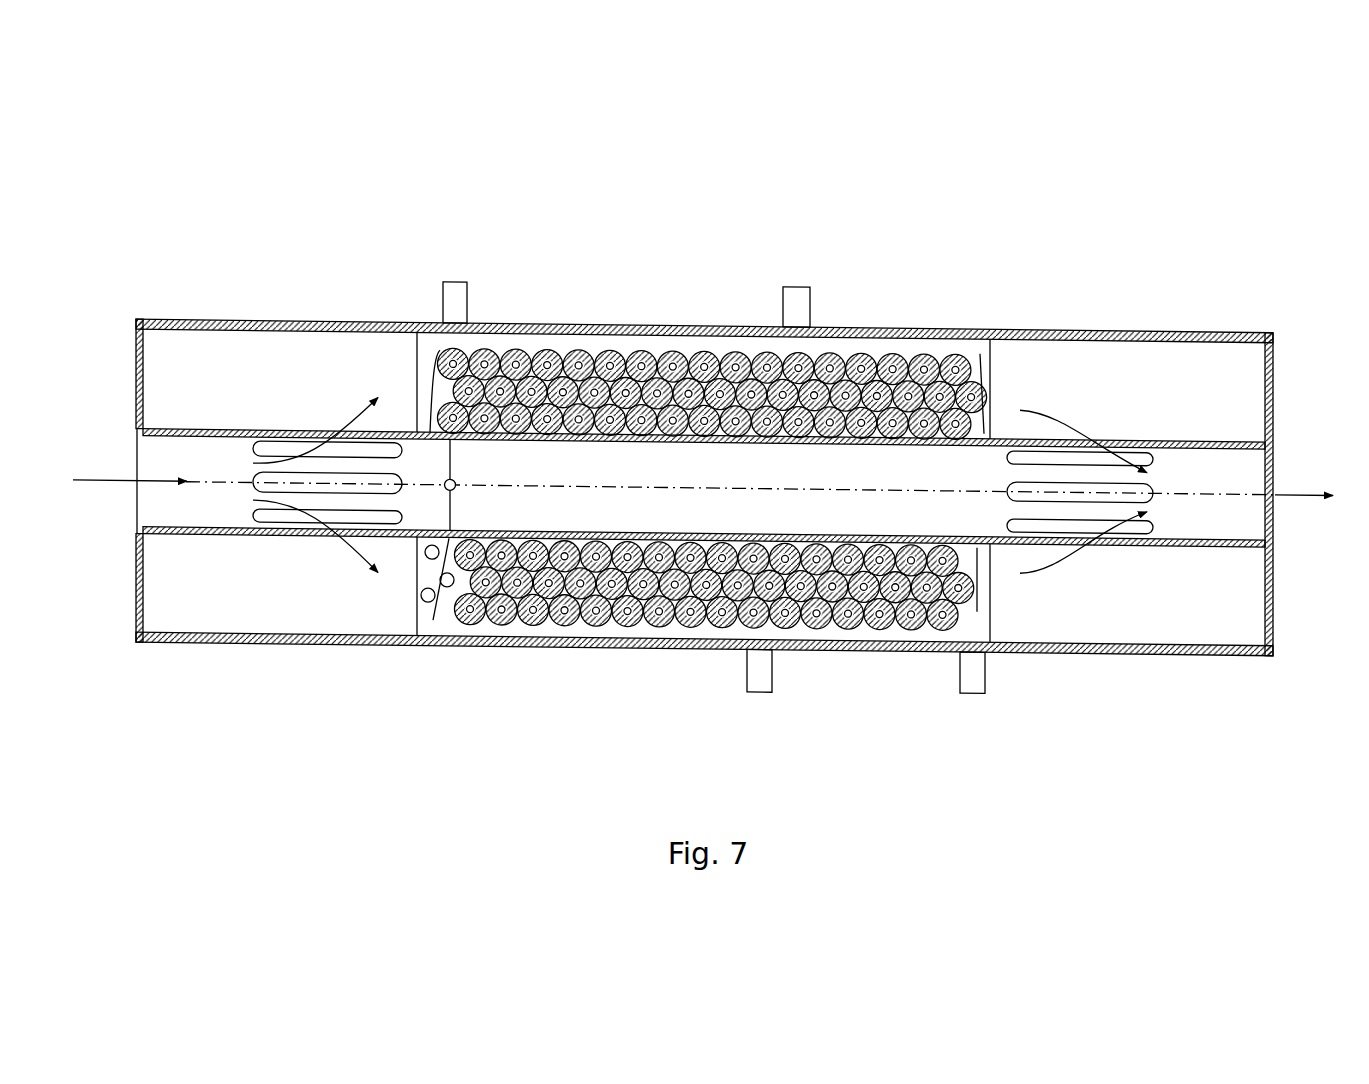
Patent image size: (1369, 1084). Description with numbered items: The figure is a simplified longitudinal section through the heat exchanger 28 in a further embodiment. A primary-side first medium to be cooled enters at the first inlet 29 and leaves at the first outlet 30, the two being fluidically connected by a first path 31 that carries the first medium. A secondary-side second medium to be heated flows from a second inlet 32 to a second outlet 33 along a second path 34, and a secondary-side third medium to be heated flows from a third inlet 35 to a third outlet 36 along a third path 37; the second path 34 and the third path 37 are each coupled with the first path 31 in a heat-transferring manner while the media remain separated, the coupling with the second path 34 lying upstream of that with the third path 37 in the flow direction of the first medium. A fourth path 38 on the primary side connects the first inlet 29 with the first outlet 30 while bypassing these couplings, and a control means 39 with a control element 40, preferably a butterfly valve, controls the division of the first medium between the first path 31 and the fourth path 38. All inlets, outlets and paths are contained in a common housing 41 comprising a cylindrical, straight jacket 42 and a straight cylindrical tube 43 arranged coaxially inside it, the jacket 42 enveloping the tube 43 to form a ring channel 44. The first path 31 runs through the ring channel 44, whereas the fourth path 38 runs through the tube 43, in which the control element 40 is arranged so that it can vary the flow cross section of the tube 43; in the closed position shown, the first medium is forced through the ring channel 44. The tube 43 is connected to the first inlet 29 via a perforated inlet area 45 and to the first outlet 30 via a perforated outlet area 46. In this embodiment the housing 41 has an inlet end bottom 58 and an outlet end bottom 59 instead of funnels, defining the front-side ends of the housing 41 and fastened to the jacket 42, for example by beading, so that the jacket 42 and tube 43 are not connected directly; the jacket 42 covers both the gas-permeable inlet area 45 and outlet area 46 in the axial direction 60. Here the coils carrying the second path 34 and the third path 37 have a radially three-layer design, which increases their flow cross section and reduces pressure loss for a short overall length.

The heat exchanger 28 is at (1137, 254).
The first inlet 29 is at (134, 505).
The first outlet 30 is at (1276, 507).
The first path 31 is at (735, 331).
The second inlet 32 is at (750, 668).
The second outlet 33 is at (445, 285).
The second path 34 is at (475, 617).
The third inlet 35 is at (978, 656).
The third outlet 36 is at (808, 295).
The third path 37 is at (838, 617).
The fourth path 38 is at (717, 467).
The control means 39 is at (459, 450).
The control element 40 is at (456, 502).
The housing 41 is at (1063, 317).
The jacket 42 is at (1037, 318).
The tube 43 is at (1234, 426).
The ring channel 44 is at (625, 332).
The perforated inlet area 45 is at (300, 439).
The perforated outlet area 46 is at (1118, 436).
The inlet end bottom 58 is at (135, 592).
The outlet end bottom 59 is at (1276, 597).
The axial direction 60 is at (192, 472).